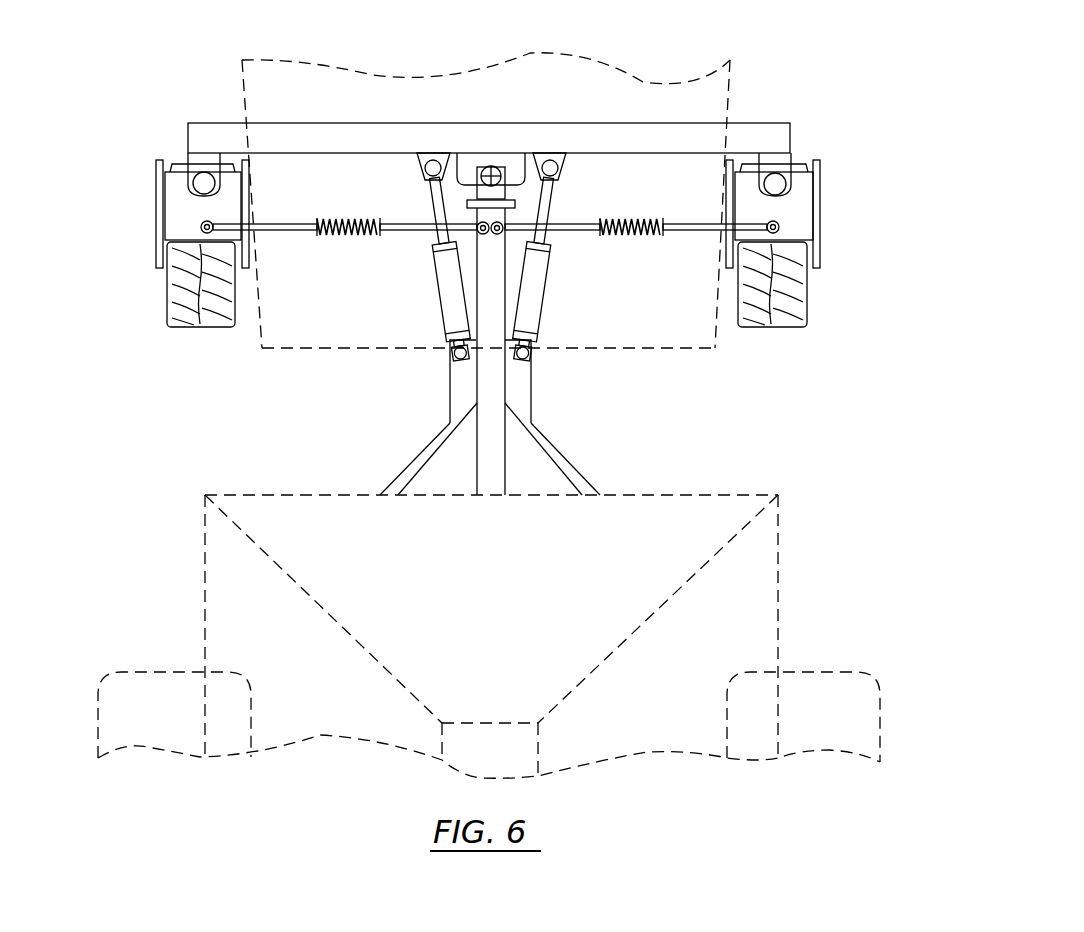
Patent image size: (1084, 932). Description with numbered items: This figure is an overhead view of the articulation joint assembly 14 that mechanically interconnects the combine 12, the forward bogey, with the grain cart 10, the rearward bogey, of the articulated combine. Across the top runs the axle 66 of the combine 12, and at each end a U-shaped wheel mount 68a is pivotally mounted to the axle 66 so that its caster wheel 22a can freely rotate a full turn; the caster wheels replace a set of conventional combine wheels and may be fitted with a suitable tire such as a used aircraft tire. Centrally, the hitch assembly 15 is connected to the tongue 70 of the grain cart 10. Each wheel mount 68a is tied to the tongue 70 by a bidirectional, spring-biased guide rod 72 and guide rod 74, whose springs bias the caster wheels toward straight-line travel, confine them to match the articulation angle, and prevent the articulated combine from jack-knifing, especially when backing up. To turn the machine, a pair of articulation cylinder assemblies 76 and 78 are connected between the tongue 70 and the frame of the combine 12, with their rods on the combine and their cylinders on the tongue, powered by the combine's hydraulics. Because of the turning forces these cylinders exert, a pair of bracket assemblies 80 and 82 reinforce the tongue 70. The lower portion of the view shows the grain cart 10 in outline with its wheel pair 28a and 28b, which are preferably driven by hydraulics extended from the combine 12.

The grain cart 10 is at (767, 479).
The combine 12 is at (721, 32).
The joint assembly 14 is at (544, 351).
The hitch assembly 15 is at (490, 148).
The caster wheel 22a is at (182, 295).
The wheel pair wheel 28a is at (168, 672).
The wheel pair wheel 28b is at (815, 672).
The axle 66 is at (393, 138).
The U-shaped wheel mount 68a is at (178, 206).
The tongue 70 is at (488, 380).
The biased guide rod 72 is at (284, 232).
The biased guide rod 74 is at (698, 232).
The articulation cylinder assembly 76 is at (440, 294).
The articulation cylinder assembly 78 is at (537, 294).
The bracket assembly 80 is at (436, 426).
The bracket assembly 82 is at (547, 423).